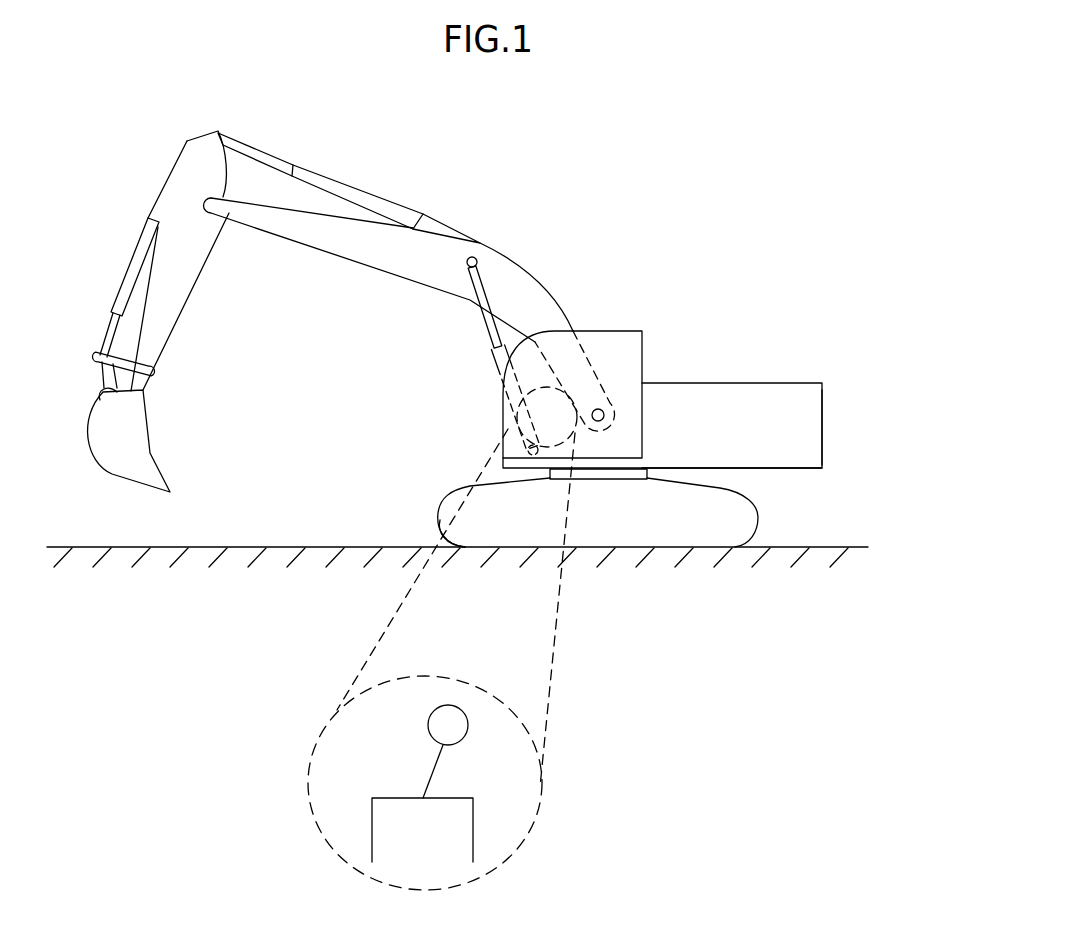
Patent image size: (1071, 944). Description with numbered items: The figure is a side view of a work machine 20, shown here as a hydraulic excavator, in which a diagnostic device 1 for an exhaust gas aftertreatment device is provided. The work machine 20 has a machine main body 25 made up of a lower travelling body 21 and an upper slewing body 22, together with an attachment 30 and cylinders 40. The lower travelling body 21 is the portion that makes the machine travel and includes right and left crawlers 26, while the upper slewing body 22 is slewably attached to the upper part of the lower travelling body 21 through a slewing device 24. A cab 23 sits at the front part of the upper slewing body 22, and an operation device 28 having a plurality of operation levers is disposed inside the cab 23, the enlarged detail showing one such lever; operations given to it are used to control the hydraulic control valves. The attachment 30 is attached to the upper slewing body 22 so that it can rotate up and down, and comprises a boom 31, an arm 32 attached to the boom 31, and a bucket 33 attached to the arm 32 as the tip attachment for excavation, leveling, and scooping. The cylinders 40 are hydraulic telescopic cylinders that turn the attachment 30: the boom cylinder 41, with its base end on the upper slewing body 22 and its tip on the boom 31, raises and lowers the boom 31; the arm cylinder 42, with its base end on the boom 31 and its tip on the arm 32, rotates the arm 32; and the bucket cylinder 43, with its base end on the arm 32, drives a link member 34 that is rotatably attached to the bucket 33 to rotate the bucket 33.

The diagnostic device 1 is at (692, 357).
The work machine 20 is at (705, 258).
The lower travelling body 21 is at (747, 515).
The upper slewing body 22 is at (793, 392).
The cab 23 is at (503, 437).
The slewing device 24 is at (550, 475).
The machine main body 25 is at (846, 450).
The crawler 26 is at (447, 530).
The operation device 28 is at (467, 712).
The attachment 30 is at (552, 233).
The boom 31 is at (336, 258).
The arm 32 is at (193, 252).
The bucket 33 is at (123, 467).
The link member 34 is at (95, 370).
The cylinders 40 is at (289, 265).
The boom cylinder 41 is at (495, 358).
The arm cylinder 42 is at (333, 180).
The bucket cylinder 43 is at (128, 273).